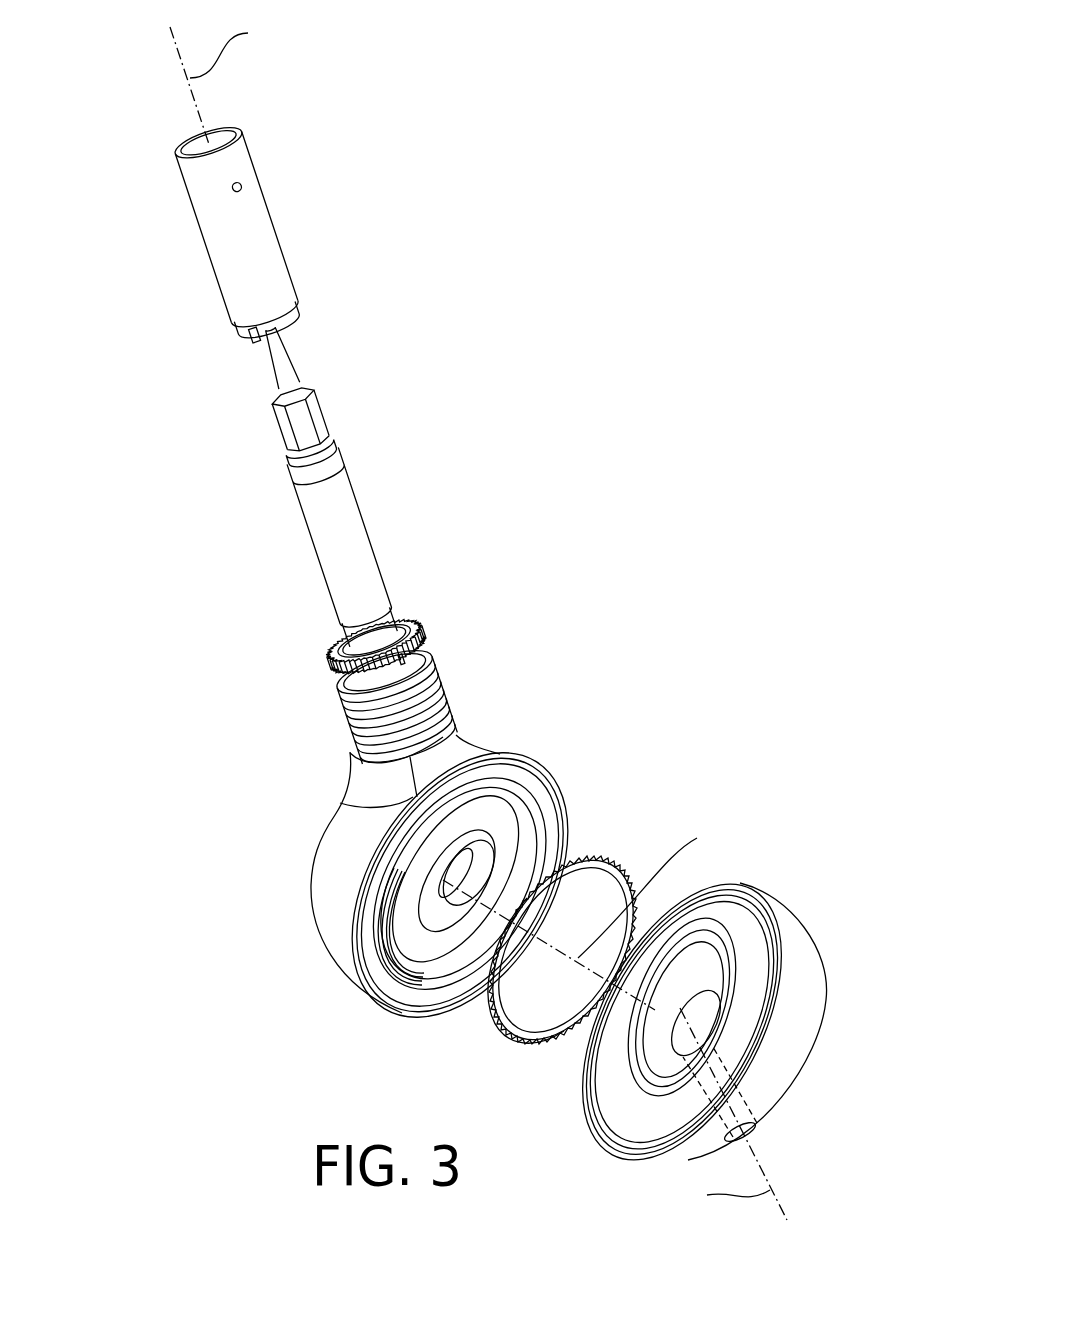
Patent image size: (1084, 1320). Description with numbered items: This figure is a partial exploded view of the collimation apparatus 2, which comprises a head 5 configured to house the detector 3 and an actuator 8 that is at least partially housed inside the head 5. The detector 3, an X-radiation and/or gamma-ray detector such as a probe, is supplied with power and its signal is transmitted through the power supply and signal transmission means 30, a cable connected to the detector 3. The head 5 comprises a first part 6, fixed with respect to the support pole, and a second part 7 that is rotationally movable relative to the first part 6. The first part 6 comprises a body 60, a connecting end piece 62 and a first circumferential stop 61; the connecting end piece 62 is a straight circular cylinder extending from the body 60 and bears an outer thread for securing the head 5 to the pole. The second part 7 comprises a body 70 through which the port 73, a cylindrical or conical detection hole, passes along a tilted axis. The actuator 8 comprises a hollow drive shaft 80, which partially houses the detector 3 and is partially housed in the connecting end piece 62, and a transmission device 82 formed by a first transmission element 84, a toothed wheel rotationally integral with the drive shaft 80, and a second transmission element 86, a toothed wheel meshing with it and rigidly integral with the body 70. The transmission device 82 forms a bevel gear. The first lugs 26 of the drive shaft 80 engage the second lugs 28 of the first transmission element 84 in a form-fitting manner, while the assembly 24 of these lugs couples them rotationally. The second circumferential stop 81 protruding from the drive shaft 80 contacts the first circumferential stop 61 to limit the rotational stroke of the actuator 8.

The apparatus 2 is at (410, 408).
The detector 3 is at (348, 512).
The head 5 is at (494, 1065).
The first part 6 is at (343, 1009).
The second part 7 is at (816, 1024).
The actuator 8 is at (268, 541).
The transmission 24 is at (176, 591).
The first lug 26 is at (250, 336).
The second lug 28 is at (215, 488).
The power supply and signal transmission means 30 is at (286, 362).
The body 60 is at (405, 845).
The first circumferential stop 61 is at (338, 684).
The connecting end piece 62 is at (372, 779).
The body 70 is at (813, 983).
The port 73 is at (758, 1133).
The drive shaft 80 is at (250, 172).
The second circumferential stop 81 is at (233, 188).
The transmission device 82 is at (593, 643).
The first transmission element 84 is at (427, 622).
The second transmission element 86 is at (576, 866).